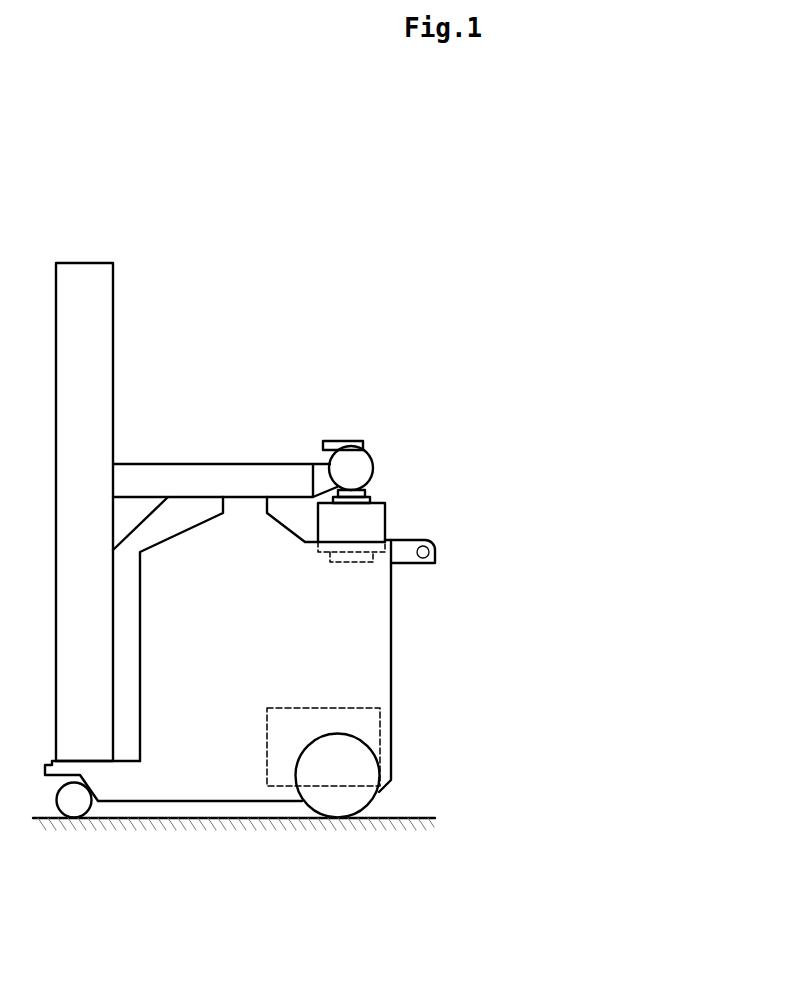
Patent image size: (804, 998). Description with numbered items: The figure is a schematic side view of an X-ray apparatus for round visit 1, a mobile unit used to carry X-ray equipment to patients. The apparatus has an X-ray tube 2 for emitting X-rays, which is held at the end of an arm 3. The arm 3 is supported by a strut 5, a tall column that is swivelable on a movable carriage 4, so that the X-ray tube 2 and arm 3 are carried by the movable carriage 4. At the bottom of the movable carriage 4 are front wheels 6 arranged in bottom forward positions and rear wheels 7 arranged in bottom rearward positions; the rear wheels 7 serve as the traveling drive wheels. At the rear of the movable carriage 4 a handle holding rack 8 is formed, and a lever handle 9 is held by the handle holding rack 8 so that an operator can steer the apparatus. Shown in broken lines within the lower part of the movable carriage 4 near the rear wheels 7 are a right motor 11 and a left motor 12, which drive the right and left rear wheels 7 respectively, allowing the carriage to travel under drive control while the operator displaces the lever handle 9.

The X-ray apparatus for round visit 1 is at (135, 307).
The X-ray tube 2 is at (370, 470).
The arm 3 is at (219, 470).
The movable carriage 4 is at (391, 670).
The strut 5 is at (106, 362).
The front wheels 6 is at (58, 812).
The rear wheels 7 is at (361, 807).
The handle holding rack 8 is at (412, 547).
The lever handle 9 is at (423, 560).
The right motor 11 is at (427, 747).
The left motor 12 is at (391, 728).